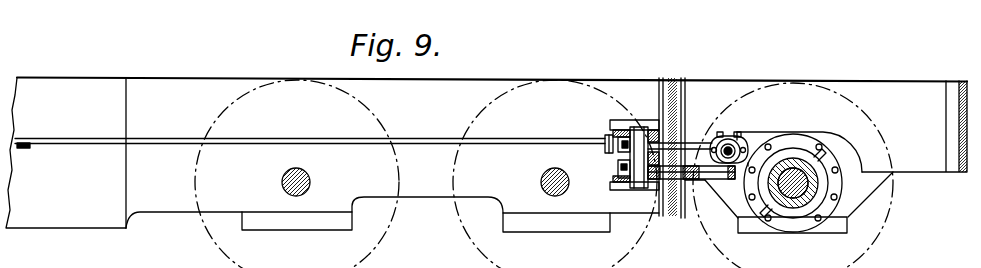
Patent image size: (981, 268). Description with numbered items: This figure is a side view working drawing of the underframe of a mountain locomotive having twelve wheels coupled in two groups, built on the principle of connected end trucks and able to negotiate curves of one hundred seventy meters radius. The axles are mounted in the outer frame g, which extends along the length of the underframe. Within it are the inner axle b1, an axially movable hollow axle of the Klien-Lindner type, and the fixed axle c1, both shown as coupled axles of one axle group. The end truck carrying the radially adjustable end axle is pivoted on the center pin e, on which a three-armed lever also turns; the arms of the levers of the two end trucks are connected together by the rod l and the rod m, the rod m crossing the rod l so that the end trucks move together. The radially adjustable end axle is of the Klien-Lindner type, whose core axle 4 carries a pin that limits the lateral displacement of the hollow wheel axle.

The rod l is at (20, 148).
The rod m is at (416, 143).
The inner axle b1 is at (310, 182).
The fixed axle c1 is at (540, 182).
The center pin e is at (620, 157).
The outer frame g is at (936, 163).
The core axle 4 is at (795, 187).